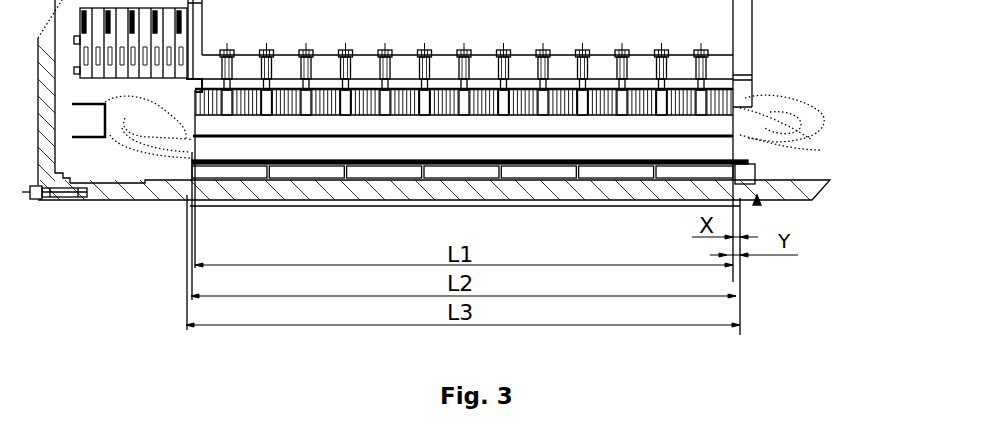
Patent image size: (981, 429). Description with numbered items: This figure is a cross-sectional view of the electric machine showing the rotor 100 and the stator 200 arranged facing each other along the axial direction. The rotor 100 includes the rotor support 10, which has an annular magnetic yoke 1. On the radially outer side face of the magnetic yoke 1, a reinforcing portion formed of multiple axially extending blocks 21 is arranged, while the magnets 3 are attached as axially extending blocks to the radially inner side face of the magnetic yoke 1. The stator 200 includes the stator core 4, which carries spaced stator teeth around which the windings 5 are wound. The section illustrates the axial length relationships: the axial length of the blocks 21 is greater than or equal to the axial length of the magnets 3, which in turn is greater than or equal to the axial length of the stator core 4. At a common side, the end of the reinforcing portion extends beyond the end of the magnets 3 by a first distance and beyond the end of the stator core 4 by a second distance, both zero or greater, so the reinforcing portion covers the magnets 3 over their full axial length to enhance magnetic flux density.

The magnetic yoke 1 is at (157, 200).
The blocks of reinforcing portion 21 is at (237, 206).
The magnet 3 is at (760, 171).
The stator core 4 is at (713, 89).
The winding 5 is at (772, 145).
The rotor support 10 is at (760, 204).
The rotor 100 is at (866, 158).
The stator 200 is at (864, 142).